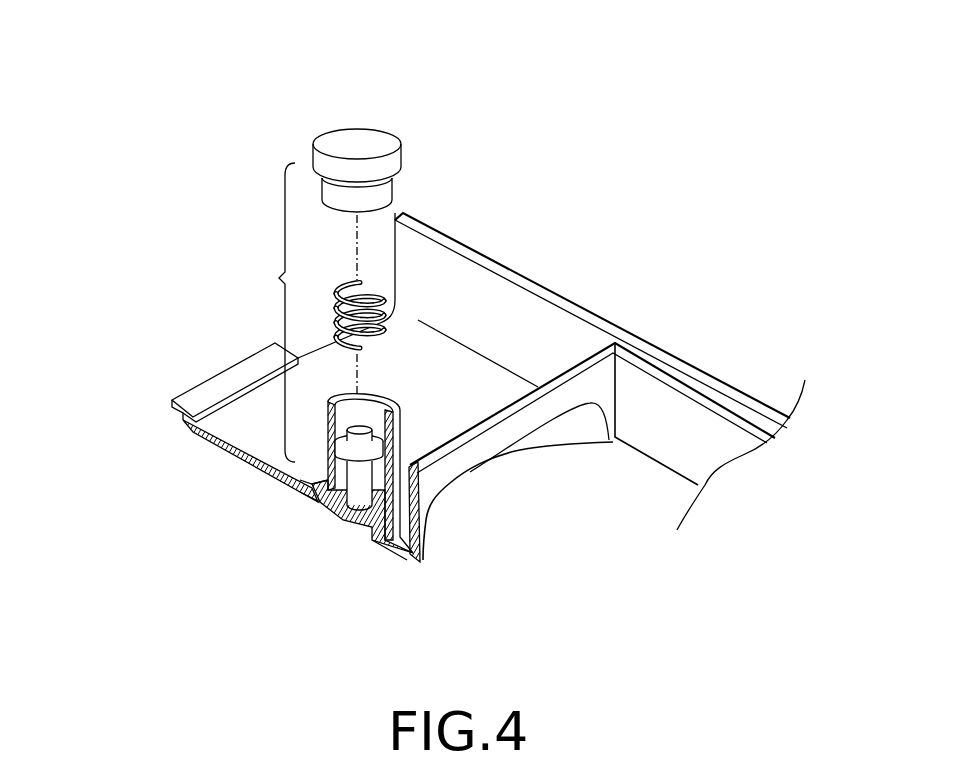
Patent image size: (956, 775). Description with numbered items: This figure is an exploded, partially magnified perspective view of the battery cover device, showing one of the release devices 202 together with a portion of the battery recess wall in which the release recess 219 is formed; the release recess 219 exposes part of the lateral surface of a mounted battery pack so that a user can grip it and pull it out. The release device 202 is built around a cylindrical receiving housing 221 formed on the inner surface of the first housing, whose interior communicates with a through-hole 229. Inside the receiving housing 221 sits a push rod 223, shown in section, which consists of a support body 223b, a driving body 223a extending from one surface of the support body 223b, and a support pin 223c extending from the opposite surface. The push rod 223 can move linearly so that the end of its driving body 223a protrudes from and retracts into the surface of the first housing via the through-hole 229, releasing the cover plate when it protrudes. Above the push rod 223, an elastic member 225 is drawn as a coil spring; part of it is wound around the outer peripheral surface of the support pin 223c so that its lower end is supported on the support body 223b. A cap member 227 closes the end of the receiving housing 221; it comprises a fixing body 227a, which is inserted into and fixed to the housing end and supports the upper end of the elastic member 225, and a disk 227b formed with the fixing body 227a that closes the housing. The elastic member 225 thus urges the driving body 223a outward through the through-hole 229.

The release device 202 is at (265, 312).
The release recess 219 is at (553, 438).
The receiving housing 221 is at (293, 477).
The push rod 223 is at (333, 523).
The driving body 223a is at (360, 513).
The support body 223b is at (314, 498).
The support pin 223c is at (325, 432).
The elastic member 225 is at (388, 323).
The cap member 227 is at (418, 114).
The fixing body 227a is at (392, 193).
The disk 227b is at (367, 150).
The through-hole 229 is at (368, 515).